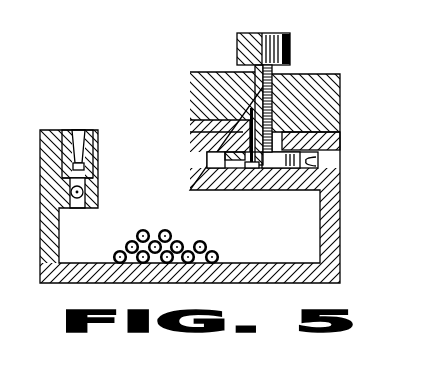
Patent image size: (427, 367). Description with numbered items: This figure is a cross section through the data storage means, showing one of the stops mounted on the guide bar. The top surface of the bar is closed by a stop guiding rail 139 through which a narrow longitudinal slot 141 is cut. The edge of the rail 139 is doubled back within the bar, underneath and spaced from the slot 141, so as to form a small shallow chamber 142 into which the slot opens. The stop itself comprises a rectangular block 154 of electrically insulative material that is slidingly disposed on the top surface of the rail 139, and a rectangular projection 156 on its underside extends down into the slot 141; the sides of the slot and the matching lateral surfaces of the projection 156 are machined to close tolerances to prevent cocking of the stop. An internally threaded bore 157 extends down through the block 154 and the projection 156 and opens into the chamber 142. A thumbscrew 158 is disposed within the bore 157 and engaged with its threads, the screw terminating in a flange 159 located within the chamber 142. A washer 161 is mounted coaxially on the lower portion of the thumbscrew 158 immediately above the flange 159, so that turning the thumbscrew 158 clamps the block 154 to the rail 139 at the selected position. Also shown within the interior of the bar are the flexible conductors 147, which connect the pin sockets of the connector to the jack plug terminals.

The rectangular block 154 is at (190, 92).
The thumbscrew 158 is at (252, 70).
The internally threaded bore 157 is at (272, 87).
The narrow longitudinal slot 141 is at (251, 128).
The washer 161 is at (208, 163).
The rectangular projection 156 is at (330, 137).
The stop guiding rail 139 is at (310, 146).
The small shallow chamber 142 is at (312, 166).
The flange 159 is at (246, 165).
The flexible conductors 147 is at (405, 170).